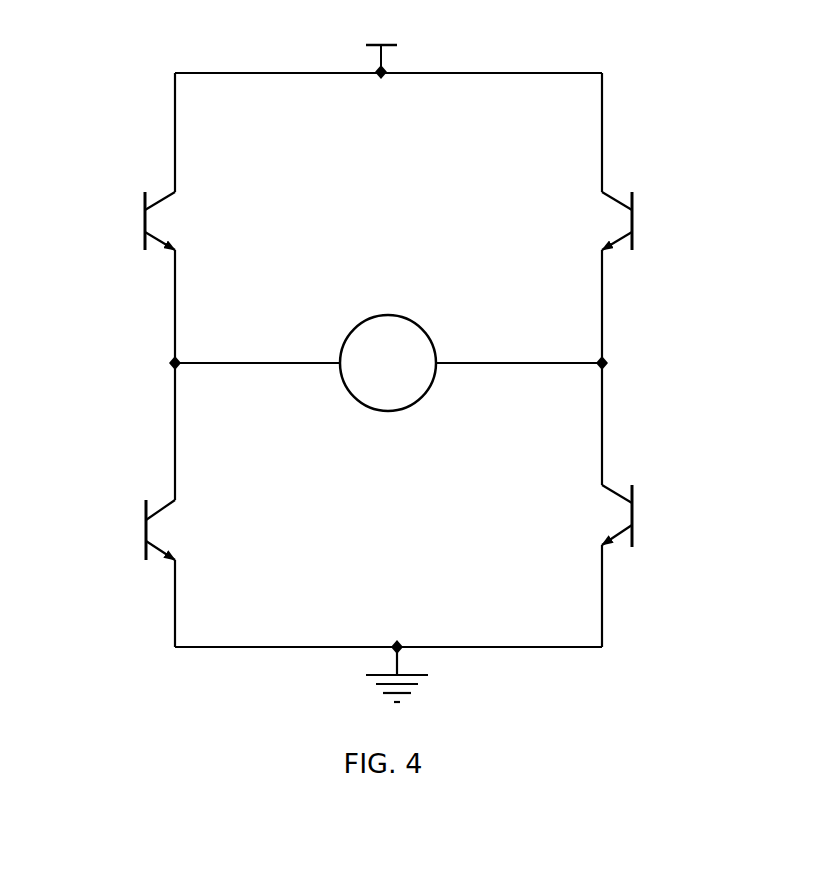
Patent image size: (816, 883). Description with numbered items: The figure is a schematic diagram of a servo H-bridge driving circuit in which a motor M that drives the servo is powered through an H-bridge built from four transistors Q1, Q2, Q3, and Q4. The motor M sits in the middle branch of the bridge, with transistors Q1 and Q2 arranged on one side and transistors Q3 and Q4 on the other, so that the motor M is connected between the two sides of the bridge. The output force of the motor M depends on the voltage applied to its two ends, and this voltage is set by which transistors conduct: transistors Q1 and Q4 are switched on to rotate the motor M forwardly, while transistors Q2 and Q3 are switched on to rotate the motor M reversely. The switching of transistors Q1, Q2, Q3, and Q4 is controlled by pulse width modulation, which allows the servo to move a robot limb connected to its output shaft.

The transistor Q1 is at (145, 221).
The transistor Q2 is at (146, 530).
The transistor Q3 is at (632, 221).
The transistor Q4 is at (632, 513).
The motor M is at (388, 363).